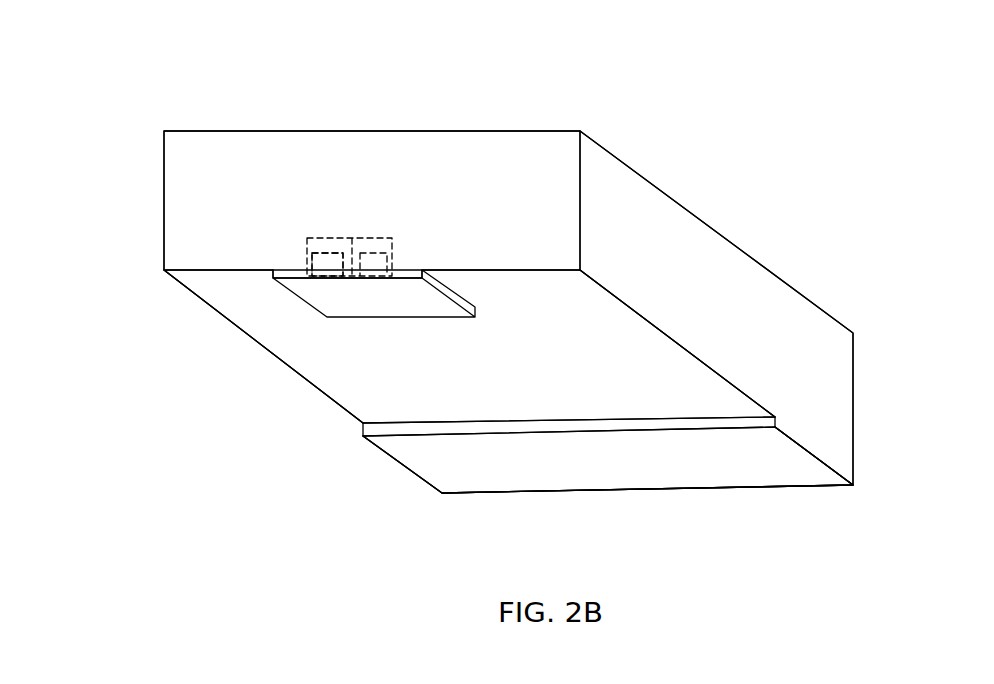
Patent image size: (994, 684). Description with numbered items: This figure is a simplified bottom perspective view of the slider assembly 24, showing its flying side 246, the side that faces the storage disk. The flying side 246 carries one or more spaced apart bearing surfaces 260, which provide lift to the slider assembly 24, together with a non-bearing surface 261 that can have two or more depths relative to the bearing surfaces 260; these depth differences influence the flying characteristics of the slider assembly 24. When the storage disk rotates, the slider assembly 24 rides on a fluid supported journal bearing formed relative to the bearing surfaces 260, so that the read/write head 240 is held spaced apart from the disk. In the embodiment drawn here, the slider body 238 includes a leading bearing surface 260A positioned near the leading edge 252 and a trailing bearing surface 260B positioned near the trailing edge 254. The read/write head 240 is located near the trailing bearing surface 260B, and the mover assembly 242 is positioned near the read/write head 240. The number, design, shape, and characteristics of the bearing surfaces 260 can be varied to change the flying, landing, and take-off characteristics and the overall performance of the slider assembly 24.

The slider assembly 24 is at (658, 137).
The slider body 238 is at (705, 267).
The read/write head 240 is at (325, 264).
The mover assembly 242 is at (372, 237).
The flying side 246 is at (367, 372).
The leading edge 252 is at (548, 494).
The trailing edge 254 is at (193, 163).
The bearing surfaces 260 is at (758, 468).
The leading bearing surface 260A is at (662, 470).
The trailing bearing surface 260B is at (307, 290).
The non-bearing surface 261 is at (302, 357).